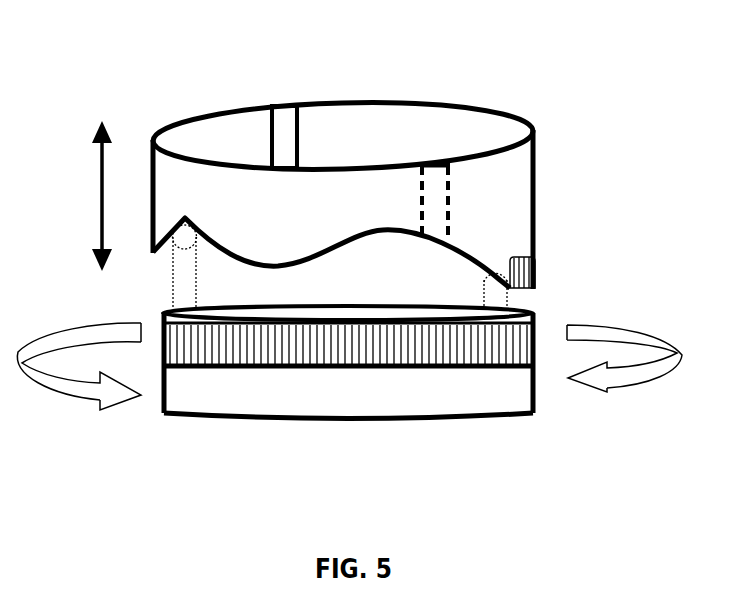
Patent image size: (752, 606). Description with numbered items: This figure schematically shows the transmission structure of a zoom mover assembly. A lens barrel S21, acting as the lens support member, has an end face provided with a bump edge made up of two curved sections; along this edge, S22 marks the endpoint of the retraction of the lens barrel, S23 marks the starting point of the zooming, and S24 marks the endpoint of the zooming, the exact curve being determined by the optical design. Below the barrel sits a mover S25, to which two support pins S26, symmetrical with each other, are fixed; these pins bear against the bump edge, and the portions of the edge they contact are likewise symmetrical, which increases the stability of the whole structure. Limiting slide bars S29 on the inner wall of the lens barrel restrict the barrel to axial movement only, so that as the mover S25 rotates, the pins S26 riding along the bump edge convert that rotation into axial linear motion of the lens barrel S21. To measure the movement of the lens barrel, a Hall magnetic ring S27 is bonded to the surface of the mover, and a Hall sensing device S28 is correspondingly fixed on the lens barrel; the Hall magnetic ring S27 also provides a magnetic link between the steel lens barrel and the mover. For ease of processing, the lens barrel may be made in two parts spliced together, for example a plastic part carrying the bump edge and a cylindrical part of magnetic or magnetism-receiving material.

The lens barrel S21 is at (494, 141).
The endpoint of the retraction of the lens barrel S22 is at (186, 219).
The starting point of the zooming S23 is at (273, 263).
The endpoint of the zooming S24 is at (383, 229).
The limiting slide bars S29 is at (284, 133).
The Hall sensing device S28 is at (523, 278).
The support pins S26 is at (493, 287).
The Hall magnetic ring S27 is at (477, 348).
The mover S25 is at (505, 400).